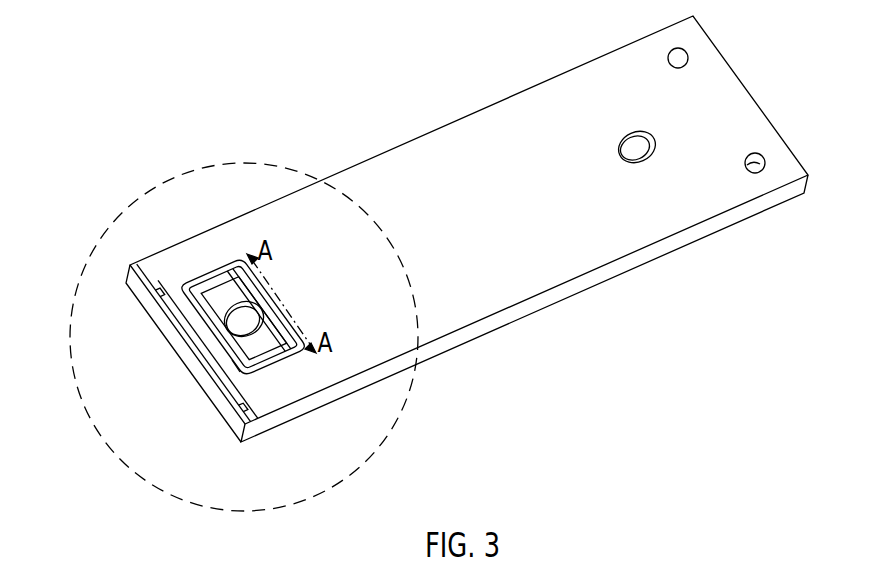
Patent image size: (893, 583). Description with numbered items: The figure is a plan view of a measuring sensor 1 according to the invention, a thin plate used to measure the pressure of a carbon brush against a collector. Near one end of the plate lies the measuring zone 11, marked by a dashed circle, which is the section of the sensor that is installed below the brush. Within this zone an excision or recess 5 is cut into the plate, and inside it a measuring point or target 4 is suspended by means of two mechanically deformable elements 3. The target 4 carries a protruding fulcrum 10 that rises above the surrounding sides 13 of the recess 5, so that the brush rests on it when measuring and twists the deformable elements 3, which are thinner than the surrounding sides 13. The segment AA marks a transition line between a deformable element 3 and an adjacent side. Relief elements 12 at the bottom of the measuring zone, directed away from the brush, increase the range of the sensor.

The measuring sensor 1 is at (316, 96).
The mechanically deformable element 3 is at (233, 362).
The measuring point (target) 4 is at (253, 349).
The excision (recess) 5 is at (200, 295).
The fulcrum (relief element) 10 is at (240, 315).
The measuring zone 11 is at (392, 445).
The relief element 12 is at (133, 289).
The surrounding sides 13 is at (210, 366).